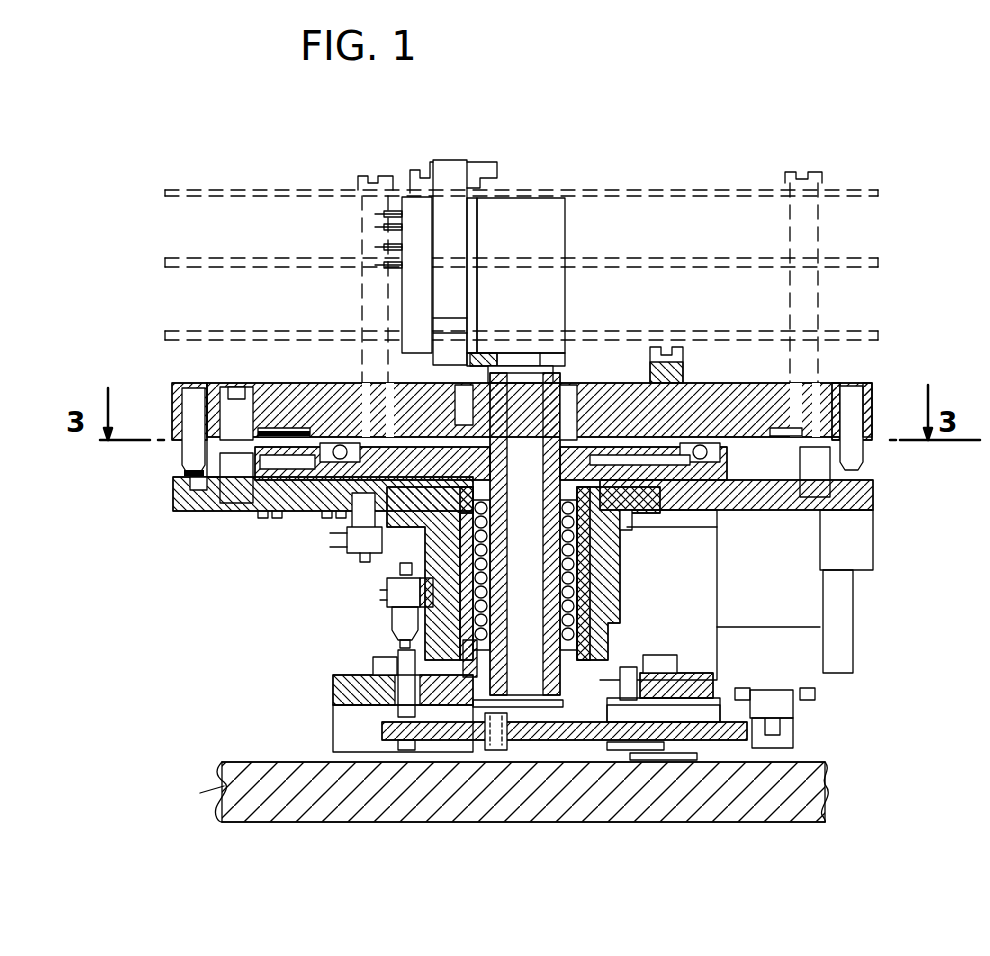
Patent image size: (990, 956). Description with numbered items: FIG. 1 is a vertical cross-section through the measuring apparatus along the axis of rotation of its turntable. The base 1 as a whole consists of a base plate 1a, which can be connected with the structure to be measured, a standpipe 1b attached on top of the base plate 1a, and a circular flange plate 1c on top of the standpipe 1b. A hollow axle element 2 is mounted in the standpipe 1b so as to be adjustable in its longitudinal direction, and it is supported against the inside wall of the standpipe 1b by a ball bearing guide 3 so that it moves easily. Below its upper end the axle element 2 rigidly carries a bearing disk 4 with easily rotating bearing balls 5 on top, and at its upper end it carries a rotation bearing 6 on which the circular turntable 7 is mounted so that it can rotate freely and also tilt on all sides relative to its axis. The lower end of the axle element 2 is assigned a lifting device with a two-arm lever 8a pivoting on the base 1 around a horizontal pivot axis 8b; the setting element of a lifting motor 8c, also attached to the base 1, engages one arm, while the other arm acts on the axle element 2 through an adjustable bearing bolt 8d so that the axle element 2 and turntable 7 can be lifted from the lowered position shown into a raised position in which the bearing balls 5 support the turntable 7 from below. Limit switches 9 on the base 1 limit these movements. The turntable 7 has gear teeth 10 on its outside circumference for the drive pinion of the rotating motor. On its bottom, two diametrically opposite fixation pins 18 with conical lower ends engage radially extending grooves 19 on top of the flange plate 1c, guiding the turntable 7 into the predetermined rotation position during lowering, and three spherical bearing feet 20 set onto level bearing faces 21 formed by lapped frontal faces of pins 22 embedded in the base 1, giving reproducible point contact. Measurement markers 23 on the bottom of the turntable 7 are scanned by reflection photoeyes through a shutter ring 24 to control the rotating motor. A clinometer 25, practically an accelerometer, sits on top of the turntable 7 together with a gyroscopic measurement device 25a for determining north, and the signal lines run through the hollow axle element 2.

The base 1 is at (310, 610).
The base plate 1a is at (806, 786).
The standpipe 1b is at (607, 580).
The flange plate 1c is at (874, 490).
The axle element 2 is at (577, 612).
The ball bearing guide 3 is at (612, 549).
The bearing disk 4 is at (175, 497).
The bearing balls 5 is at (340, 448).
The rotation bearing 6 is at (580, 398).
The turntable 7 is at (755, 384).
The two-arm lever 8a is at (682, 740).
The horizontal pivot axis 8b is at (625, 755).
The lifting motor 8c is at (808, 614).
The adjustable bearing bolt 8d is at (495, 752).
The limit switches 9 is at (355, 548).
The gear teeth 10 is at (872, 407).
The fixation pins 18 is at (190, 388).
The grooves 19 is at (205, 480).
The bearing feet 20 is at (227, 395).
The bearing faces 21 is at (200, 465).
The pins 22 is at (236, 504).
The measurement markers 23 is at (292, 430).
The shutter ring 24 is at (297, 511).
The clinometer 25 is at (412, 210).
The gyroscopic measurement device 25a is at (545, 205).